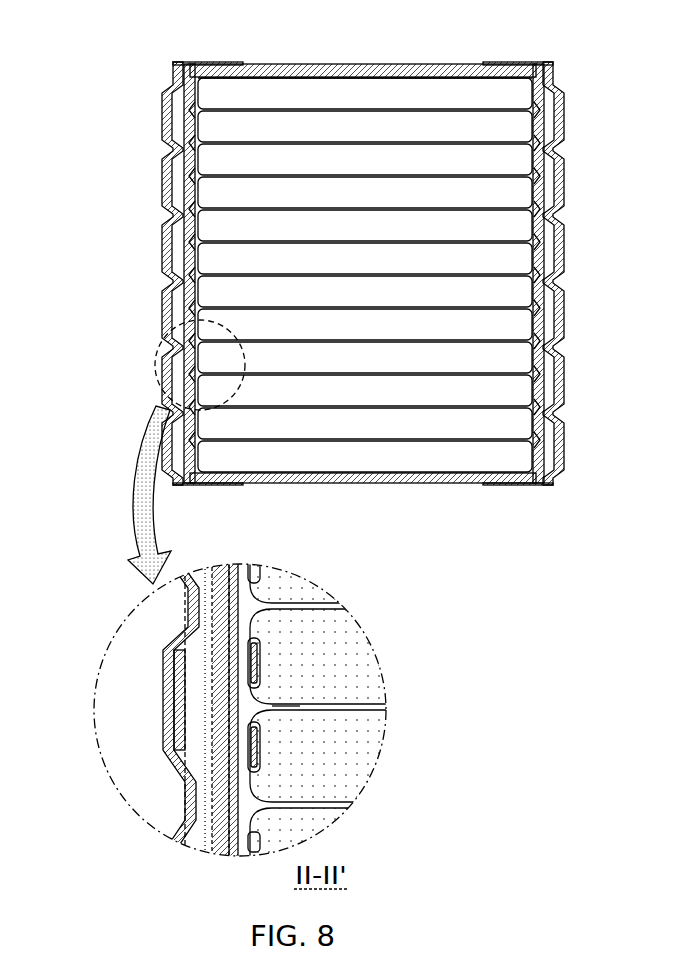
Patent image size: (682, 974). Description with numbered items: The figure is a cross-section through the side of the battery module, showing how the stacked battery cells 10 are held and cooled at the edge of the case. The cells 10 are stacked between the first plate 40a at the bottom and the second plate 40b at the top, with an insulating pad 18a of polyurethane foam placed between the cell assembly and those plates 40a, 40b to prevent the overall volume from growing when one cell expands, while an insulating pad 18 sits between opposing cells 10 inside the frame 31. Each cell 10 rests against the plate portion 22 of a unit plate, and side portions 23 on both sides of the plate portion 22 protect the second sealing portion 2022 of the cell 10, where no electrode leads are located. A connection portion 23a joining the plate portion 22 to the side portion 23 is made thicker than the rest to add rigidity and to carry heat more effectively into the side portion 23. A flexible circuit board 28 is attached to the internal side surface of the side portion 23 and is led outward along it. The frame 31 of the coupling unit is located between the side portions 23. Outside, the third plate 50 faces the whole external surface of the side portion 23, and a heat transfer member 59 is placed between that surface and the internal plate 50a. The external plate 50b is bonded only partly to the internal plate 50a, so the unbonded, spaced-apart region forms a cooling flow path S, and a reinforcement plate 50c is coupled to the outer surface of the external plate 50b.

The battery cell 10 is at (511, 92).
The insulating pad 18 is at (325, 603).
The insulating pad 18a is at (346, 62).
The plate portion 22 is at (262, 690).
The side portion 23 is at (262, 773).
The connection portion 23a is at (262, 720).
The second sealing portion 2022 is at (262, 735).
The circuit board 28 is at (262, 648).
The frame 31 is at (230, 572).
The first plate 40a is at (412, 484).
The second plate 40b is at (398, 64).
The third plate 50 is at (165, 75).
The internal plate 50a is at (222, 788).
The external plate 50b is at (183, 715).
The reinforcement plate 50c is at (165, 706).
The heat transfer member 59 is at (551, 426).
The cooling flow path S is at (200, 703).